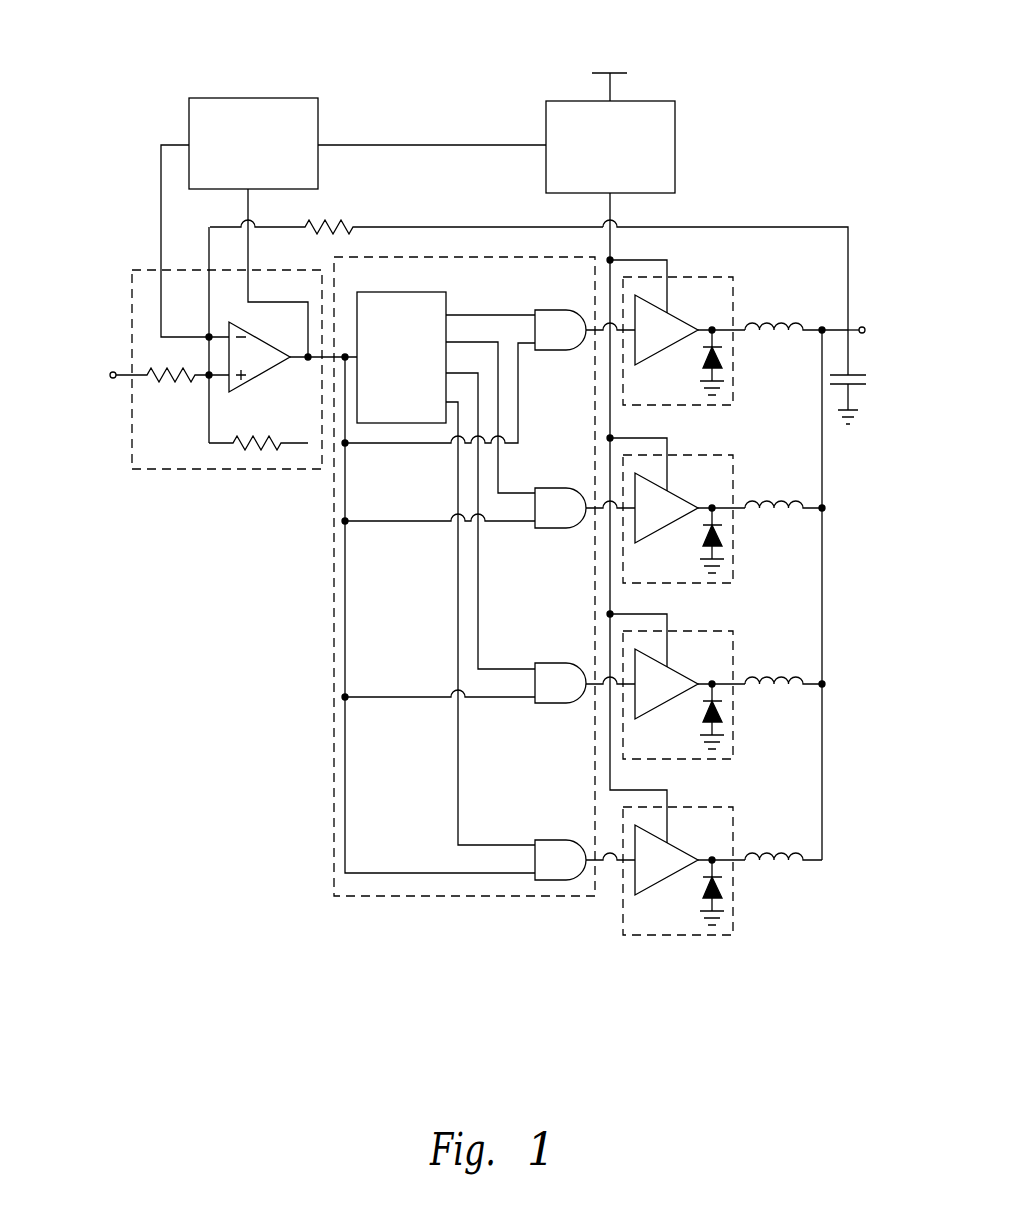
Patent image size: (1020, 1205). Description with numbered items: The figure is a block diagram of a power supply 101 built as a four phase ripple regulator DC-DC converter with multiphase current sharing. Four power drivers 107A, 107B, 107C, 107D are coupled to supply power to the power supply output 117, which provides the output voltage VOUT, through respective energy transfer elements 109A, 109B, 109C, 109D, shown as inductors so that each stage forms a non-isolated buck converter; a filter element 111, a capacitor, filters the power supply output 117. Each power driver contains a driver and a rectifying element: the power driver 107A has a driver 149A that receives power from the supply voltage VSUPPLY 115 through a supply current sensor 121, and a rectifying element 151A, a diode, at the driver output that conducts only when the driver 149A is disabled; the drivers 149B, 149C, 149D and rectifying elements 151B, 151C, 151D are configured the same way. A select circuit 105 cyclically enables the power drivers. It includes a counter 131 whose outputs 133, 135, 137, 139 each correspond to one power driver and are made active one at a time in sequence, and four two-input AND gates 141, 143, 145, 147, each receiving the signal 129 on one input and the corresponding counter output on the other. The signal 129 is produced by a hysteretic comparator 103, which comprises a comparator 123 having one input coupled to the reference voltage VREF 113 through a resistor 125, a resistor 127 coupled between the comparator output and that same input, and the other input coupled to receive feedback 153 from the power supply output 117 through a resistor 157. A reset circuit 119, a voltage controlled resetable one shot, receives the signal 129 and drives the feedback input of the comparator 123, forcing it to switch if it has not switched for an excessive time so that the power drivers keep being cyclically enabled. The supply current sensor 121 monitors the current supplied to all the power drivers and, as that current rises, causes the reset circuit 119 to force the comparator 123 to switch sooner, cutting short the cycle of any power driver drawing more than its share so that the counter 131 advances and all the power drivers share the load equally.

The power supply 101 is at (808, 126).
The hysteretic comparator 103 is at (165, 470).
The select circuit 105 is at (332, 867).
The power driver 107A is at (733, 402).
The power driver 107B is at (733, 580).
The power driver 107C is at (733, 756).
The power driver 107D is at (733, 932).
The energy transfer element 109A is at (783, 323).
The energy transfer element 109B is at (781, 501).
The energy transfer element 109C is at (781, 677).
The energy transfer element 109D is at (781, 852).
The filter element 111 is at (866, 386).
The reference voltage VREF 113 is at (87, 356).
The supply voltage VSUPPLY 115 is at (617, 58).
The power supply output 117 is at (862, 326).
The reset circuit 119 is at (256, 98).
The supply current sensor 121 is at (675, 150).
The comparator 123 is at (250, 380).
The resistor 125 is at (172, 393).
The resistor 127 is at (255, 447).
The signal 129 is at (300, 354).
The counter 131 is at (425, 292).
The output 133 is at (463, 313).
The output 135 is at (498, 340).
The output 137 is at (478, 392).
The output 139 is at (458, 417).
The AND gate 141 is at (570, 351).
The AND gate 143 is at (562, 529).
The AND gate 145 is at (562, 704).
The AND gate 147 is at (562, 881).
The driver 149A is at (682, 313).
The driver 149B is at (693, 480).
The driver 149C is at (693, 656).
The driver 149D is at (693, 832).
The rectifying element 151A is at (700, 358).
The rectifying element 151B is at (700, 536).
The rectifying element 151C is at (700, 712).
The rectifying element 151D is at (700, 888).
The feedback 153 is at (815, 230).
The resistor 157 is at (318, 223).